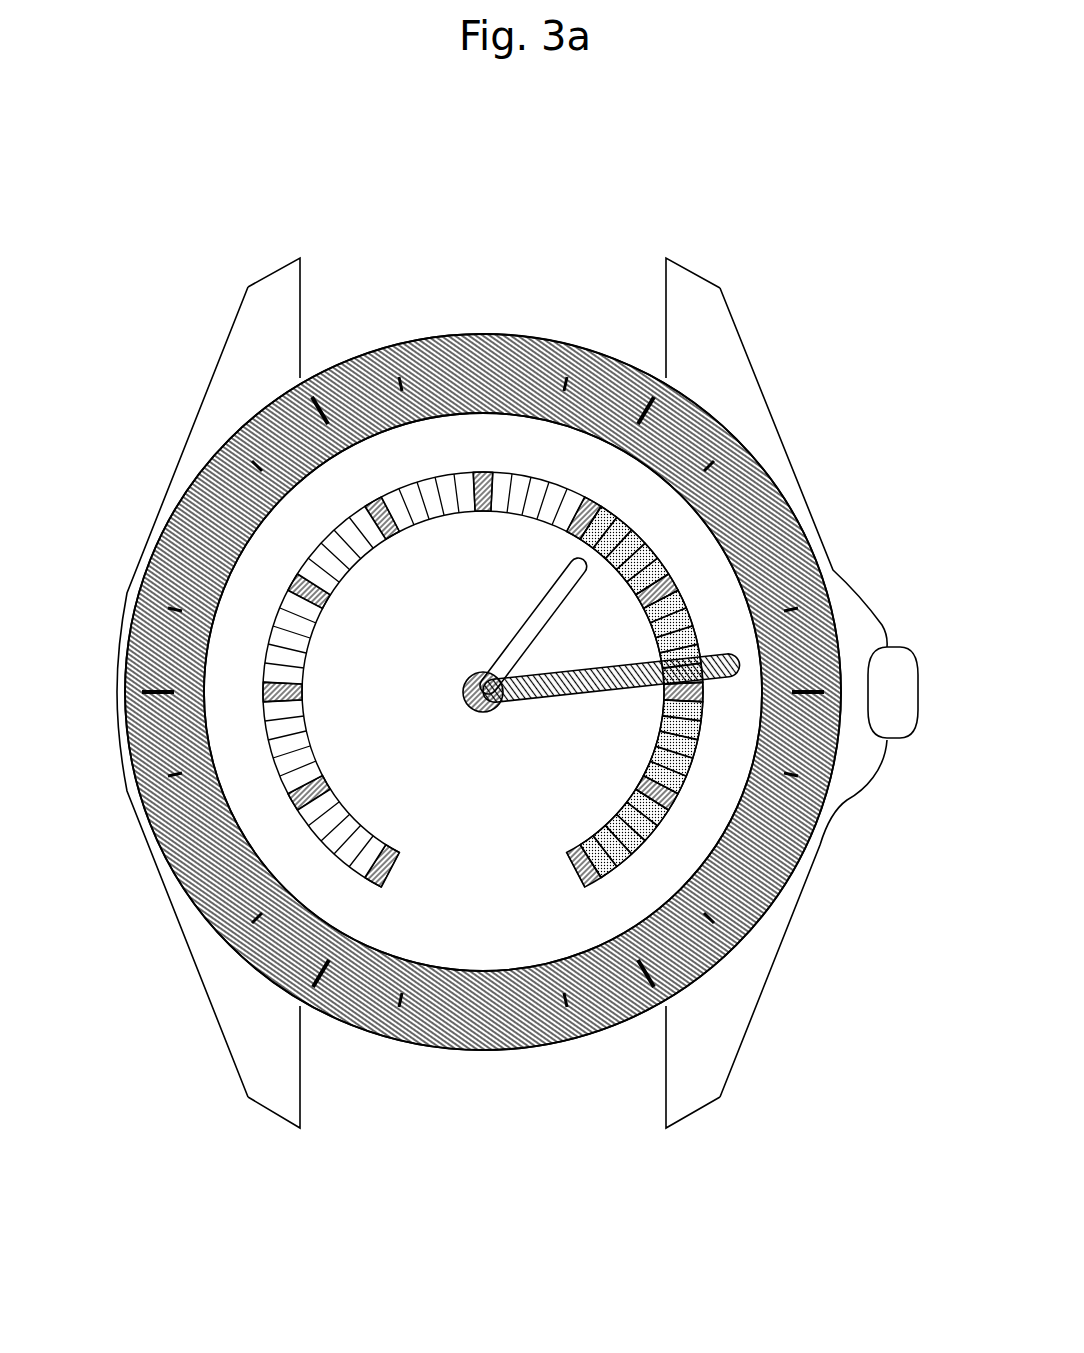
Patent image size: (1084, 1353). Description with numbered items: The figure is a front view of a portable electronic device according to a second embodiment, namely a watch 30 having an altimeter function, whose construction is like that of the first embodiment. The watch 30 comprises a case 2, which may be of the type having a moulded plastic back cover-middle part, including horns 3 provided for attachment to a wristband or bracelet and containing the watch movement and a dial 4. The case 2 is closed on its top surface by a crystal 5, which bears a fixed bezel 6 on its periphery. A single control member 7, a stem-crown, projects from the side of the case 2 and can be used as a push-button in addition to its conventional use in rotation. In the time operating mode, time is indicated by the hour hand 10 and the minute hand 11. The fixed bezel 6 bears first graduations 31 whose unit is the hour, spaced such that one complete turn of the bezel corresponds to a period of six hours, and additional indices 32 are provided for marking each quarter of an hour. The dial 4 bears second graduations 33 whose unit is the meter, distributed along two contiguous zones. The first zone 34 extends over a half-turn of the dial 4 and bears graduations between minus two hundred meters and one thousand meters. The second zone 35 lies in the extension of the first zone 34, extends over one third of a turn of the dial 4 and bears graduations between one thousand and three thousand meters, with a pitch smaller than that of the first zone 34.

The case 2 is at (847, 590).
The horns 3 is at (283, 300).
The dial 4 is at (652, 492).
The crystal 5 is at (231, 650).
The fixed bezel 6 is at (837, 820).
The control member 7 is at (898, 667).
The hour hand 10 is at (545, 615).
The minute hand 11 is at (528, 700).
The watch 30 is at (613, 1206).
The first graduations 31 is at (487, 1028).
The additional indices 32 is at (177, 780).
The second graduations 33 is at (543, 878).
The first zone 34 is at (350, 613).
The second zone 35 is at (625, 717).